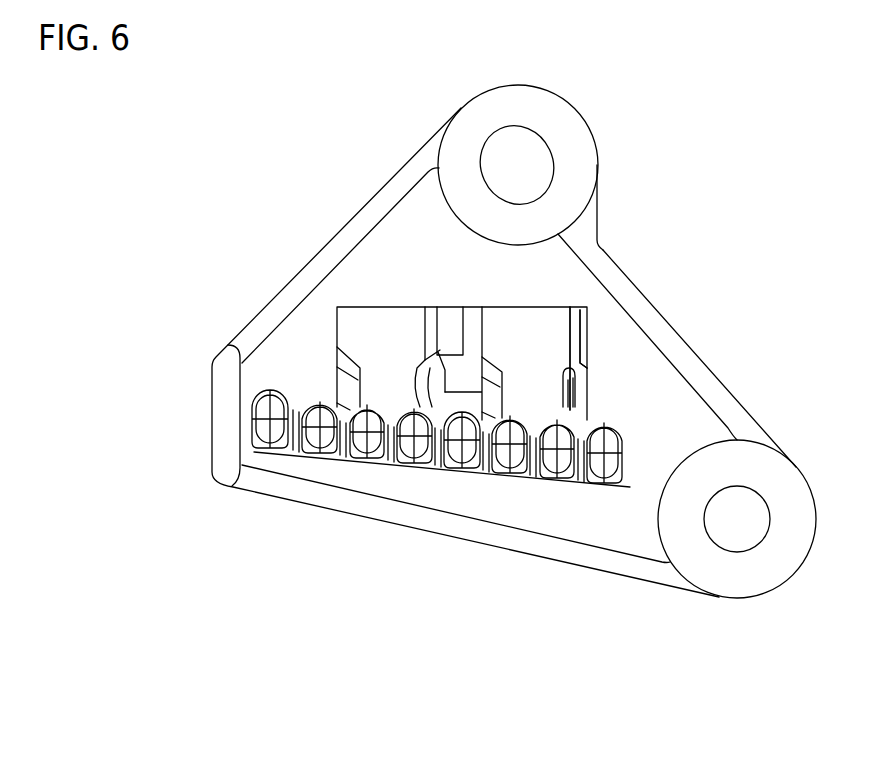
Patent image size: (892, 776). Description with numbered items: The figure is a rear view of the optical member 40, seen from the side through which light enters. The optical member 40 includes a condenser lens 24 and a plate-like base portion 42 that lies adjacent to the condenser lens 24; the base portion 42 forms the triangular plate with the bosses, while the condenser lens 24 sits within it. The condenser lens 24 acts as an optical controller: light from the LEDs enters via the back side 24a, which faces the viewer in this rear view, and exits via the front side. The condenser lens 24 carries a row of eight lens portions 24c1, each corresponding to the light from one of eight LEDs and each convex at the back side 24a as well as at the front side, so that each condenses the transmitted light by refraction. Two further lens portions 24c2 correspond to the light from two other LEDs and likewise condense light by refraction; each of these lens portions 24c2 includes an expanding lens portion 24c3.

The optical member 40 is at (489, 750).
The base portion 42 is at (650, 391).
The condenser lens 24 is at (320, 368).
The back side 24a is at (460, 490).
The lens portions 24c1 is at (271, 436).
The lens portions 24c2 is at (540, 402).
The expanding lens portion 24c3 is at (530, 327).